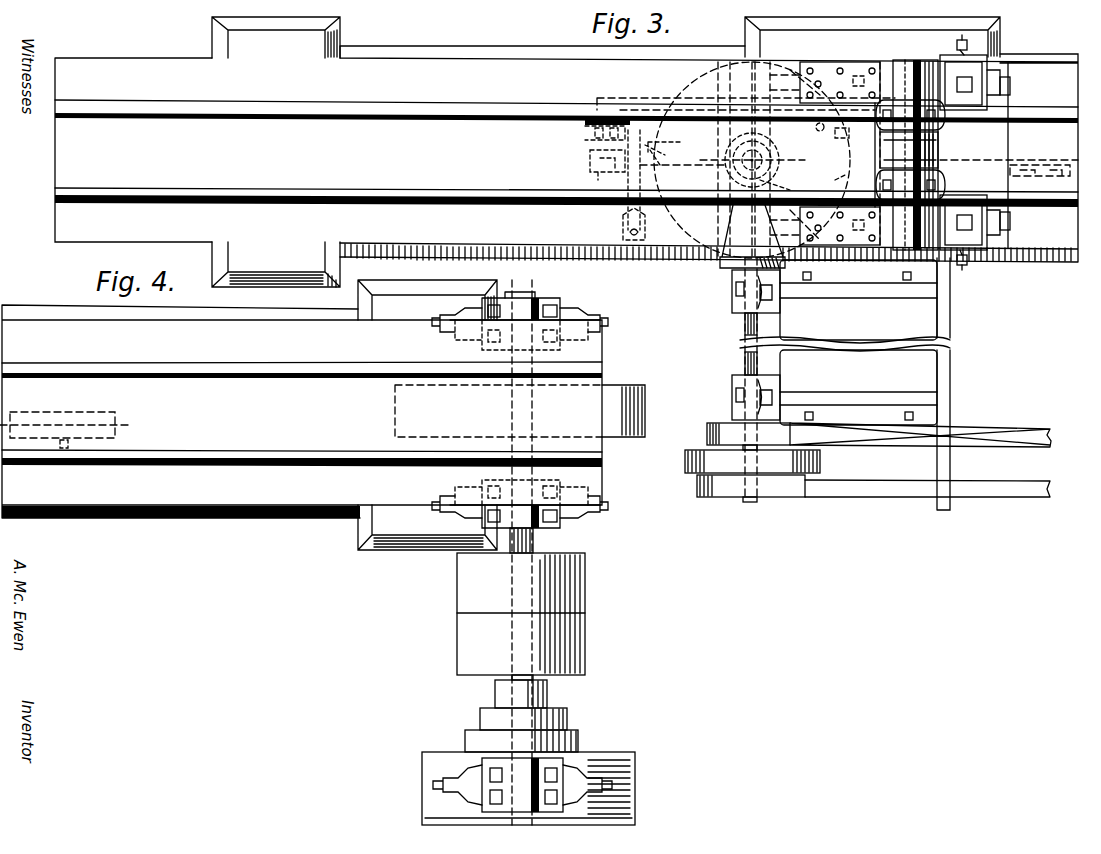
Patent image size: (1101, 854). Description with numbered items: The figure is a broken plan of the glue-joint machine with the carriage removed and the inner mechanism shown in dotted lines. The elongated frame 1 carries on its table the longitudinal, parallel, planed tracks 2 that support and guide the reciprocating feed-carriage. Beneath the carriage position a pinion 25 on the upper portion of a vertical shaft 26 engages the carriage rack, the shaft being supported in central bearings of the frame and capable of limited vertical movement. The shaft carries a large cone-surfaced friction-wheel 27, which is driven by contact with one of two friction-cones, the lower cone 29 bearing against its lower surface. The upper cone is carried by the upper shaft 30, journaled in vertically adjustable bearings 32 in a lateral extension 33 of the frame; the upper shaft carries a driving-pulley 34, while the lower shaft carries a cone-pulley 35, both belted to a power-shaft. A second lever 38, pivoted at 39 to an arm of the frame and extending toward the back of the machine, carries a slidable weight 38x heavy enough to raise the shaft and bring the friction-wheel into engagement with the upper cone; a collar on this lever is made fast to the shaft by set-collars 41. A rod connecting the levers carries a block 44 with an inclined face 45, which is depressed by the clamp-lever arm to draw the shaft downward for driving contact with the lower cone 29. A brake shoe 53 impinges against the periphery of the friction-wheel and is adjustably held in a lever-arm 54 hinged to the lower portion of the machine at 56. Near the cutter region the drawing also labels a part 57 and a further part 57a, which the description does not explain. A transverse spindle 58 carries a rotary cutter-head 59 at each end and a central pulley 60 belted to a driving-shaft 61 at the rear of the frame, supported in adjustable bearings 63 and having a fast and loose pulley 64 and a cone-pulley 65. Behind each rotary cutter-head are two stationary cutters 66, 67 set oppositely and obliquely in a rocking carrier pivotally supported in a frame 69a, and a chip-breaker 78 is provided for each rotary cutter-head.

In FIG. 3, the frame 1 is at (566, 152).
In FIG. 4, the frame 1 is at (323, 415).
In FIG. 3, the tracks 2 is at (275, 101).
In FIG. 4, the tracks 2 is at (255, 363).
In FIG. 3, the pinion 25 is at (815, 128).
In FIG. 3, the vertical shaft 26 is at (818, 145).
In FIG. 3, the friction-wheel 27 is at (708, 138).
In FIG. 3, the friction-cone 29 is at (722, 262).
In FIG. 3, the upper shaft 30 is at (758, 360).
In FIG. 3, the bearings 32 is at (732, 302).
In FIG. 3, the lateral extension 33 is at (845, 384).
In FIG. 3, the driving-pulley 34 is at (716, 423).
In FIG. 3, the cone-pulley 35 is at (697, 472).
In FIG. 3, the second lever 38 is at (660, 94).
In FIG. 4, the second lever 38 is at (8, 412).
In FIG. 4, the weight 38x is at (80, 412).
In FIG. 3, the pivot 39 is at (846, 182).
In FIG. 3, the set-collars 41 is at (835, 142).
In FIG. 3, the block 44 is at (592, 124).
In FIG. 3, the inclined face 45 is at (633, 123).
In FIG. 3, the brake shoe 53 is at (662, 150).
In FIG. 3, the lever-arm 54 is at (622, 170).
In FIG. 3, the hinge 56 is at (789, 182).
In FIG. 3, the link 57 is at (778, 78).
In FIG. 3, the clamp 57a is at (926, 150).
In FIG. 3, the transverse spindle 58 is at (905, 60).
In FIG. 3, the rotary cutter-head 59 is at (925, 62).
In FIG. 3, the pulley 60 is at (1009, 161).
In FIG. 4, the driving-shaft 61 is at (534, 540).
In FIG. 4, the adjustable bearings 63 is at (540, 300).
In FIG. 4, the fast and loose pulley 64 is at (538, 614).
In FIG. 4, the cone-pulley 65 is at (532, 713).
In FIG. 3, the stationary cutter 66 is at (1010, 80).
In FIG. 3, the stationary cutter 67 is at (970, 152).
In FIG. 3, the frame 69a is at (972, 50).
In FIG. 3, the chip-breaker 78 is at (836, 63).